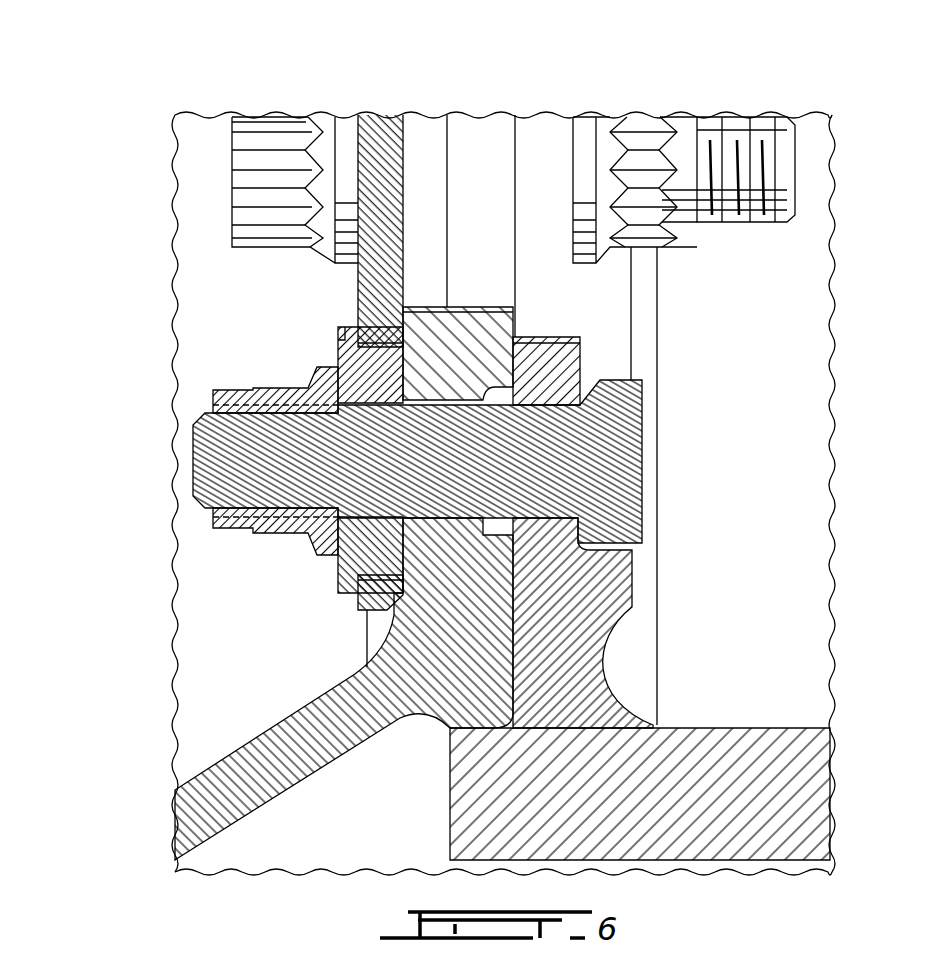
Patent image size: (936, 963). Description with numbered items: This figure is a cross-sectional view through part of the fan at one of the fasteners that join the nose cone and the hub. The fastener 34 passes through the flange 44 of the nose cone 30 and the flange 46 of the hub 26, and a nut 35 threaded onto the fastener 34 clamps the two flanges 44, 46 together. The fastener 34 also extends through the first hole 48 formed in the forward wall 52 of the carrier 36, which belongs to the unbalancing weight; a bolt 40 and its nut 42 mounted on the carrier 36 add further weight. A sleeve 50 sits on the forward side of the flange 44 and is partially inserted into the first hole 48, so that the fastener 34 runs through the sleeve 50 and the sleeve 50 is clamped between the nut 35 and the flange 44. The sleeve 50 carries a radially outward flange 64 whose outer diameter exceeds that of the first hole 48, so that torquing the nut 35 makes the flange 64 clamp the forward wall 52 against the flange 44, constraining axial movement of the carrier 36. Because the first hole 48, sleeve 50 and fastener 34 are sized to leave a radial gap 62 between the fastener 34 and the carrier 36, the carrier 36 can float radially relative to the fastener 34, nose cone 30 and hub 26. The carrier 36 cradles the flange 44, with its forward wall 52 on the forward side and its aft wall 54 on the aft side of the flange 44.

The hub 26 is at (760, 257).
The nose cone 30 is at (210, 621).
The fastener 34 is at (605, 457).
The nut 35 is at (220, 398).
The carrier 36 is at (482, 108).
The bolt 40 is at (253, 178).
The nut 42 is at (641, 130).
The flange of nose cone 44 is at (446, 575).
The flange of hub 46 is at (567, 571).
The first hole 48 is at (245, 630).
The gap 62 is at (375, 567).
The sleeve 50 is at (370, 535).
The forward wall 52 is at (375, 322).
The aft wall 54 is at (545, 317).
The flange of sleeve 64 is at (345, 332).